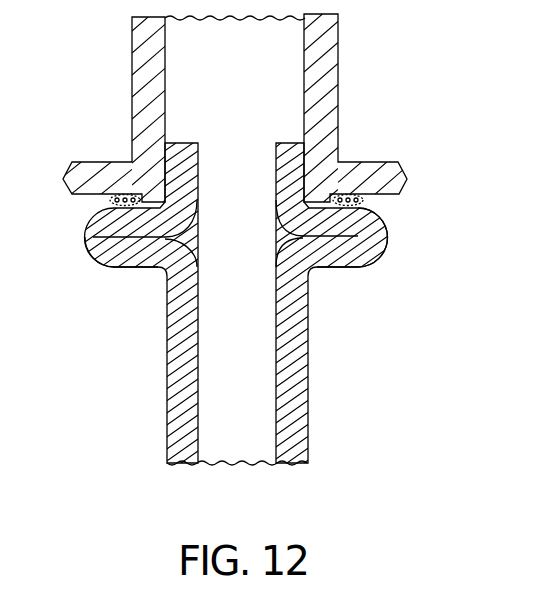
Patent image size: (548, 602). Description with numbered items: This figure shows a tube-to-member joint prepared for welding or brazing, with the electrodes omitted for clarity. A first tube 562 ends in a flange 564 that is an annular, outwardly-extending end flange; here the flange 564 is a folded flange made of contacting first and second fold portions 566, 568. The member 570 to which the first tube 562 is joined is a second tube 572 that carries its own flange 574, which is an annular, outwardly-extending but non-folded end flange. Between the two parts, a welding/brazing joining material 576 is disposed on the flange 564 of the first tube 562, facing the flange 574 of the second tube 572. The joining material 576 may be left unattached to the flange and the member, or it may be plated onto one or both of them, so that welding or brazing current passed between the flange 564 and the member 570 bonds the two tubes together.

The first tube 562 is at (312, 403).
The flange 564 is at (348, 268).
The first fold portion 566 is at (127, 268).
The second fold portion 568 is at (87, 236).
The member 570 is at (342, 50).
The second tube 572 is at (342, 32).
The flange 574 is at (376, 161).
The welding/brazing joining material 576 is at (365, 200).